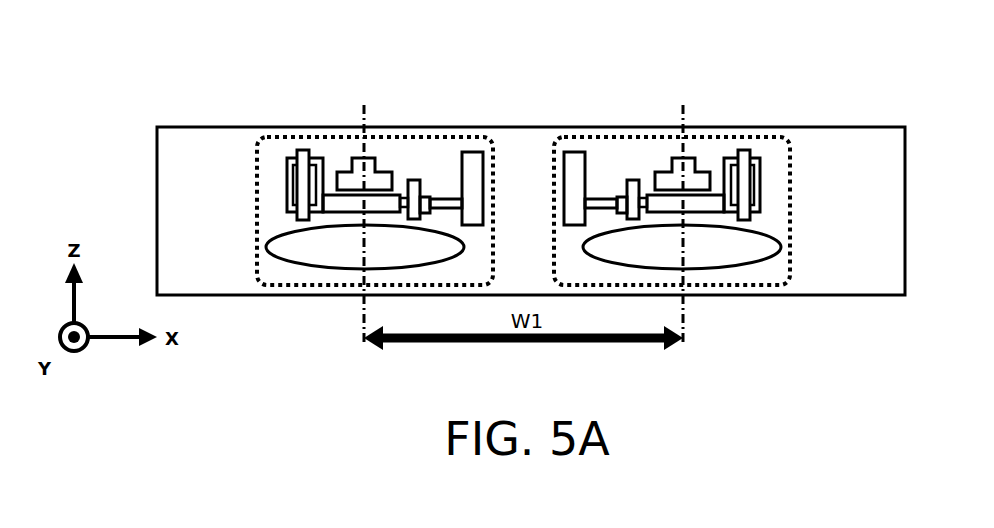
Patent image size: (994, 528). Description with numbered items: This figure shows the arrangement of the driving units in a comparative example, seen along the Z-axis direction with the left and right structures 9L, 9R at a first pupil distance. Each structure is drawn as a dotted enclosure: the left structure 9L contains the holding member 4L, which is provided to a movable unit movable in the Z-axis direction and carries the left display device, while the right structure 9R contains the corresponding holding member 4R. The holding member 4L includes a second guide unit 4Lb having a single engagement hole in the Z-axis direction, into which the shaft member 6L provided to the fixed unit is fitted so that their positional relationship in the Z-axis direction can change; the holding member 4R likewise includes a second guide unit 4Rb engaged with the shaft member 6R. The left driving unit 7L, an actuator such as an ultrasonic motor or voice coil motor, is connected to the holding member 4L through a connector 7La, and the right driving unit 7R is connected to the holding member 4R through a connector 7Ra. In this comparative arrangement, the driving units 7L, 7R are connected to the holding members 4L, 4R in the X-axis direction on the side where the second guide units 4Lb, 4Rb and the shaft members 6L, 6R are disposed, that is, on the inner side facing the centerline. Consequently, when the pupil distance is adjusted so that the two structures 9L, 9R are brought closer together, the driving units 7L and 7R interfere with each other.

The holding member 4L is at (287, 161).
The second guide unit 4Lb is at (401, 195).
The shaft member 6L is at (414, 180).
The driving unit 7L is at (473, 152).
The connector 7La is at (445, 199).
The structure 9L is at (257, 232).
The holding member 4R is at (760, 161).
The second guide unit 4Rb is at (647, 195).
The shaft member 6R is at (632, 180).
The driving unit 7R is at (572, 152).
The connector 7Ra is at (601, 199).
The structure 9R is at (790, 232).